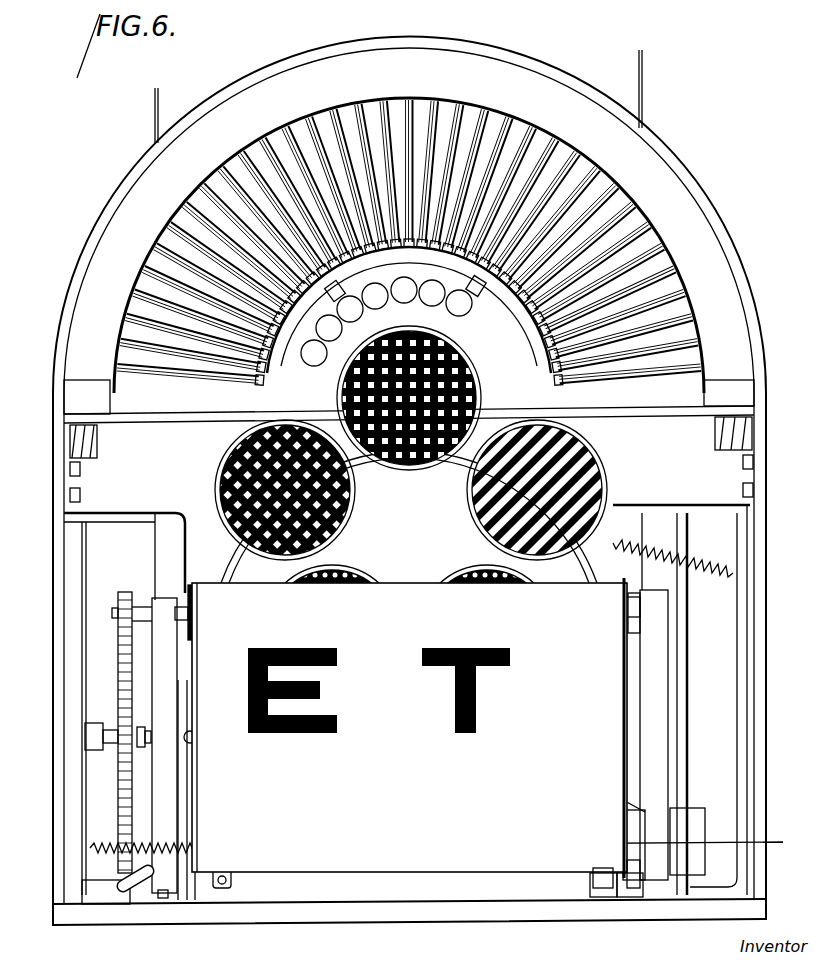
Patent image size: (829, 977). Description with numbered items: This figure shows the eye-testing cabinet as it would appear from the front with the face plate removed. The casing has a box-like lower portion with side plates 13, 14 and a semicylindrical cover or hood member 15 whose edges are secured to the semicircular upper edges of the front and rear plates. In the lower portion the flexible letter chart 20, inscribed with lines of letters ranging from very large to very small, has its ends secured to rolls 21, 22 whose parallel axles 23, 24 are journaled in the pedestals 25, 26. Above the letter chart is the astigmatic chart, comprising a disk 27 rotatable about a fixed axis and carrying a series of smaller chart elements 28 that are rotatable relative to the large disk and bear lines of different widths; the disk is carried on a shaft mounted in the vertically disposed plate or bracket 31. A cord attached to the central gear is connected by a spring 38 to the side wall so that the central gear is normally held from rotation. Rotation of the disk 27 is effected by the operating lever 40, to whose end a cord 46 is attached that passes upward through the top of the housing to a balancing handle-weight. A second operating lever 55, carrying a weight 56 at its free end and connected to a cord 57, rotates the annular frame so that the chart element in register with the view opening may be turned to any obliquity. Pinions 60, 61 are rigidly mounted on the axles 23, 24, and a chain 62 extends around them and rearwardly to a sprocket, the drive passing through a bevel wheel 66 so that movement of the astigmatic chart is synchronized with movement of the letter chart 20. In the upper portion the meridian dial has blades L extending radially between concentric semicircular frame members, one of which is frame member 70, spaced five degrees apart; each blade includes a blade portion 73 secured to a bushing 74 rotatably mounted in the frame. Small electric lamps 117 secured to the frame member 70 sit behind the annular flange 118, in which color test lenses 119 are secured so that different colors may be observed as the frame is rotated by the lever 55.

The side plate 13 is at (62, 556).
The side plate 14 is at (757, 547).
The semicylindrical cover or hood member 15 is at (123, 190).
The letter chart 20 is at (416, 733).
The roll 21 is at (190, 595).
The roll 22 is at (638, 860).
The axle 23 is at (640, 604).
The axle 24 is at (672, 830).
The pedestal 25 is at (160, 655).
The pedestal 26 is at (660, 700).
The disk 27 is at (216, 508).
The chart element 28 is at (355, 500).
The plate or bracket 31 is at (195, 537).
The spring 38 is at (688, 560).
The operating lever 40 is at (640, 790).
The cord 46 is at (643, 98).
The operating lever 55 is at (140, 880).
The weight 56 is at (186, 866).
The cord 57 is at (155, 107).
The pinion 60 is at (118, 600).
The pinion 61 is at (123, 865).
The chain 62 is at (122, 778).
The bevel wheel 66 is at (190, 702).
The semicircular frame member 70 is at (542, 337).
The blade portion 73 is at (650, 398).
The bushing 74 is at (263, 357).
The electric lamp 117 is at (331, 298).
The annular flange 118 is at (470, 330).
The color test lens 119 is at (404, 286).
The blade L is at (206, 188).